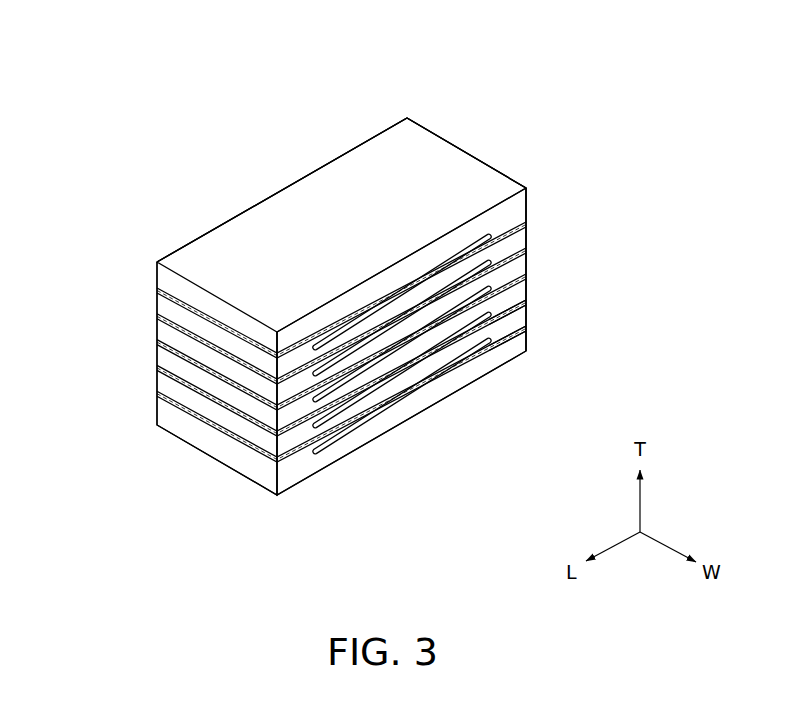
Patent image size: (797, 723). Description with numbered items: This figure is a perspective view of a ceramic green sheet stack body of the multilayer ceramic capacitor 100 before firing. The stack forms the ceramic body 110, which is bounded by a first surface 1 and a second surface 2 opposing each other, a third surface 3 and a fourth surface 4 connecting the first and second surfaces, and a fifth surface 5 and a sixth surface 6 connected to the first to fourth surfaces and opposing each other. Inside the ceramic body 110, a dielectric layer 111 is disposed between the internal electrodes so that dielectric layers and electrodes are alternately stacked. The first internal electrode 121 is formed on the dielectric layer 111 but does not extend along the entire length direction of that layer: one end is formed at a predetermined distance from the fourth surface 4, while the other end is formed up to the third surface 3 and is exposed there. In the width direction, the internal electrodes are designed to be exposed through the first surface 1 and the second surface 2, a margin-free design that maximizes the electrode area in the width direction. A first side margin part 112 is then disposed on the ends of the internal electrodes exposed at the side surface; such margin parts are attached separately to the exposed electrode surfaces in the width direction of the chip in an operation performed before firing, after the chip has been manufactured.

The multilayer ceramic capacitor 100 is at (168, 27).
The first surface 1 is at (229, 261).
The second surface 2 is at (500, 284).
The third surface 3 is at (217, 404).
The fourth surface 4 is at (458, 179).
The fifth surface 5 is at (364, 178).
The sixth surface 6 is at (387, 367).
The ceramic body 110 is at (295, 192).
The dielectric layer 111 is at (166, 376).
The first side margin part 112 is at (508, 333).
The first internal electrode 121 is at (163, 320).